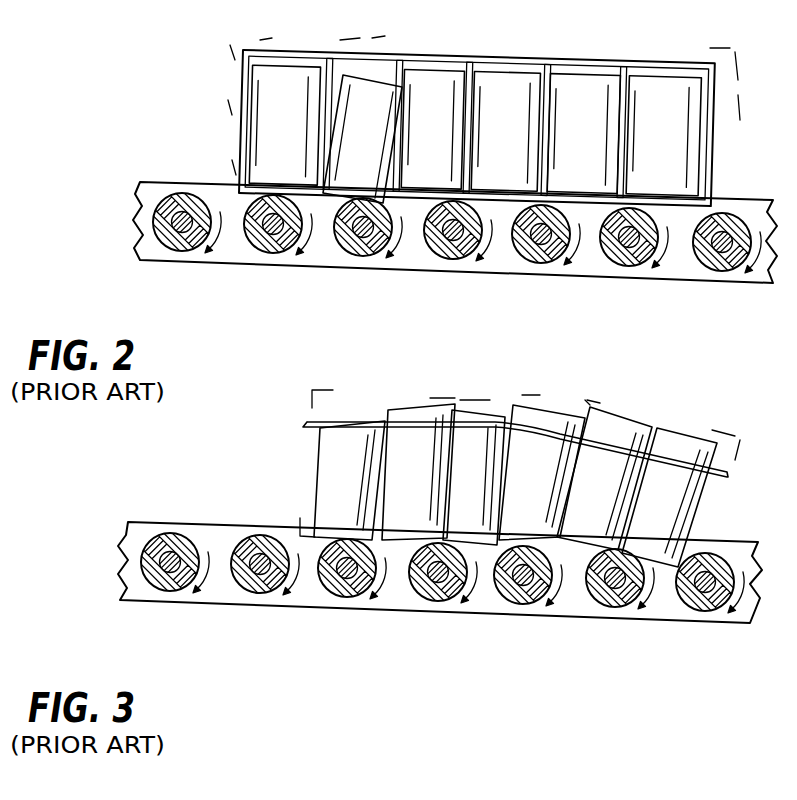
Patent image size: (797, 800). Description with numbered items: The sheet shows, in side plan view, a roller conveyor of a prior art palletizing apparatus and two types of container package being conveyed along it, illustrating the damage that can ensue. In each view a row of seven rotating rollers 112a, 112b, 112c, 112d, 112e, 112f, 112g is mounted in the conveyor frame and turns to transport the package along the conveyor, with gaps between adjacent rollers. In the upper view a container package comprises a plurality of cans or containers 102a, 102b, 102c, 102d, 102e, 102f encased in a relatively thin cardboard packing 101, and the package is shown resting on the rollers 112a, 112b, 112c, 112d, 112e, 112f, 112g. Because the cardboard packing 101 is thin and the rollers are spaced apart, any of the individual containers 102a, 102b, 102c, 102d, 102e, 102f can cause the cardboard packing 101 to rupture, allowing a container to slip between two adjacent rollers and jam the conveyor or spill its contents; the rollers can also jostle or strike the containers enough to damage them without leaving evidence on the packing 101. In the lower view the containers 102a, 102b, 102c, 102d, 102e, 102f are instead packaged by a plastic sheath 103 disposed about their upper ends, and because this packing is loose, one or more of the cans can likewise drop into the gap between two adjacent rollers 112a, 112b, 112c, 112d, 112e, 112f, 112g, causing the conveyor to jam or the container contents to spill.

In FIG. 2, the cardboard packing 101 is at (528, 65).
In FIG. 2, the container 102a is at (315, 163).
In FIG. 3, the container 102a is at (340, 470).
In FIG. 2, the container 102b is at (360, 110).
In FIG. 3, the container 102b is at (415, 417).
In FIG. 2, the container 102c is at (438, 100).
In FIG. 3, the container 102c is at (480, 418).
In FIG. 2, the container 102d is at (528, 186).
In FIG. 3, the container 102d is at (547, 440).
In FIG. 2, the container 102e is at (602, 97).
In FIG. 3, the container 102e is at (620, 420).
In FIG. 2, the container 102f is at (660, 107).
In FIG. 3, the container 102f is at (690, 447).
In FIG. 3, the plastic sheath 103 is at (306, 420).
In FIG. 2, the rotating roller 112a is at (178, 242).
In FIG. 3, the rotating roller 112a is at (165, 585).
In FIG. 2, the rotating roller 112b is at (273, 242).
In FIG. 3, the rotating roller 112b is at (258, 585).
In FIG. 2, the rotating roller 112c is at (360, 245).
In FIG. 3, the rotating roller 112c is at (345, 590).
In FIG. 2, the rotating roller 112d is at (451, 248).
In FIG. 3, the rotating roller 112d is at (436, 595).
In FIG. 2, the rotating roller 112e is at (540, 255).
In FIG. 3, the rotating roller 112e is at (520, 597).
In FIG. 2, the rotating roller 112f is at (630, 255).
In FIG. 3, the rotating roller 112f is at (613, 600).
In FIG. 2, the rotating roller 112g is at (722, 260).
In FIG. 3, the rotating roller 112g is at (703, 607).